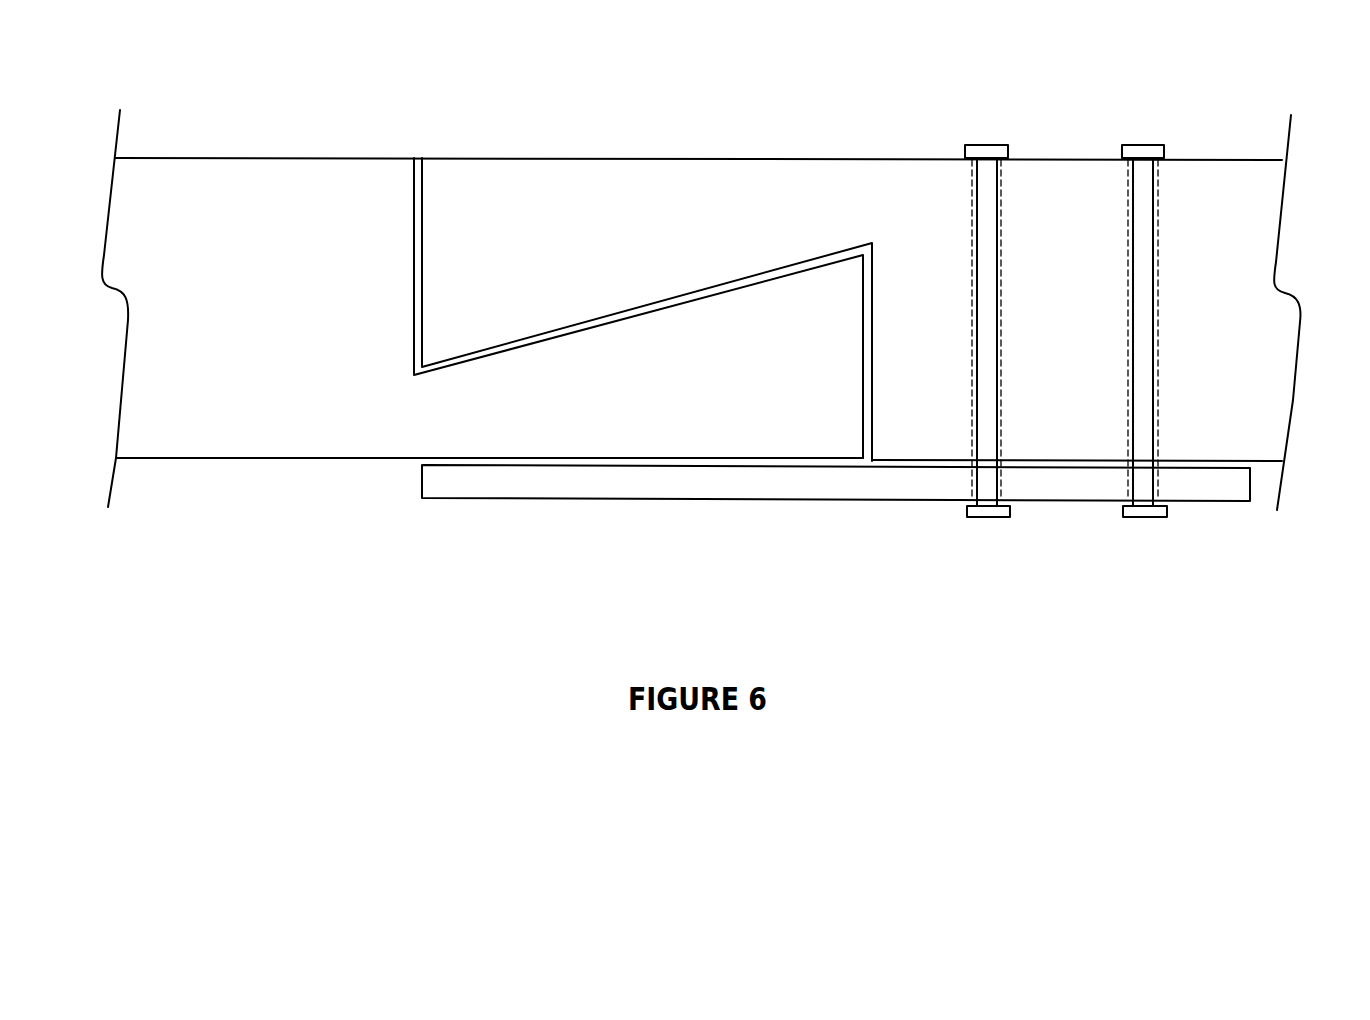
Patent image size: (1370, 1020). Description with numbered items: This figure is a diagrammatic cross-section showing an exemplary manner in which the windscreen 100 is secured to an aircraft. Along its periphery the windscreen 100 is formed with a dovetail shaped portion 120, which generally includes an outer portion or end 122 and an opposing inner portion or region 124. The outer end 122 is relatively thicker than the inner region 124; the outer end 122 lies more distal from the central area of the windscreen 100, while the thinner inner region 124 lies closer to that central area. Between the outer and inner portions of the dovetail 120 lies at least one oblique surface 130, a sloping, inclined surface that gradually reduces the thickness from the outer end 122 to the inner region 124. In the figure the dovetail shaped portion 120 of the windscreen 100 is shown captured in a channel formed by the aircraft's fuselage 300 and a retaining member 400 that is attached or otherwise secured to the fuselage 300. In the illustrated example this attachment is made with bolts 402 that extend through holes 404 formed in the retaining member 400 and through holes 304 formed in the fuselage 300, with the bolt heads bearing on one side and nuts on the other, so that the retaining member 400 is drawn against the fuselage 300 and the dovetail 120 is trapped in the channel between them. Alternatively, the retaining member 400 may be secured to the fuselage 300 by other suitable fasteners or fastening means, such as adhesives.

The windscreen 100 is at (168, 157).
The dovetail shaped portion 120 is at (667, 402).
The outer portion or end 122 is at (860, 368).
The inner portion or region 124 is at (417, 413).
The oblique surface 130 is at (630, 315).
The fuselage 300 is at (708, 158).
The holes 304 is at (973, 250).
The retaining member 400 is at (897, 503).
The bolts 402 is at (983, 145).
The holes 404 is at (1002, 482).